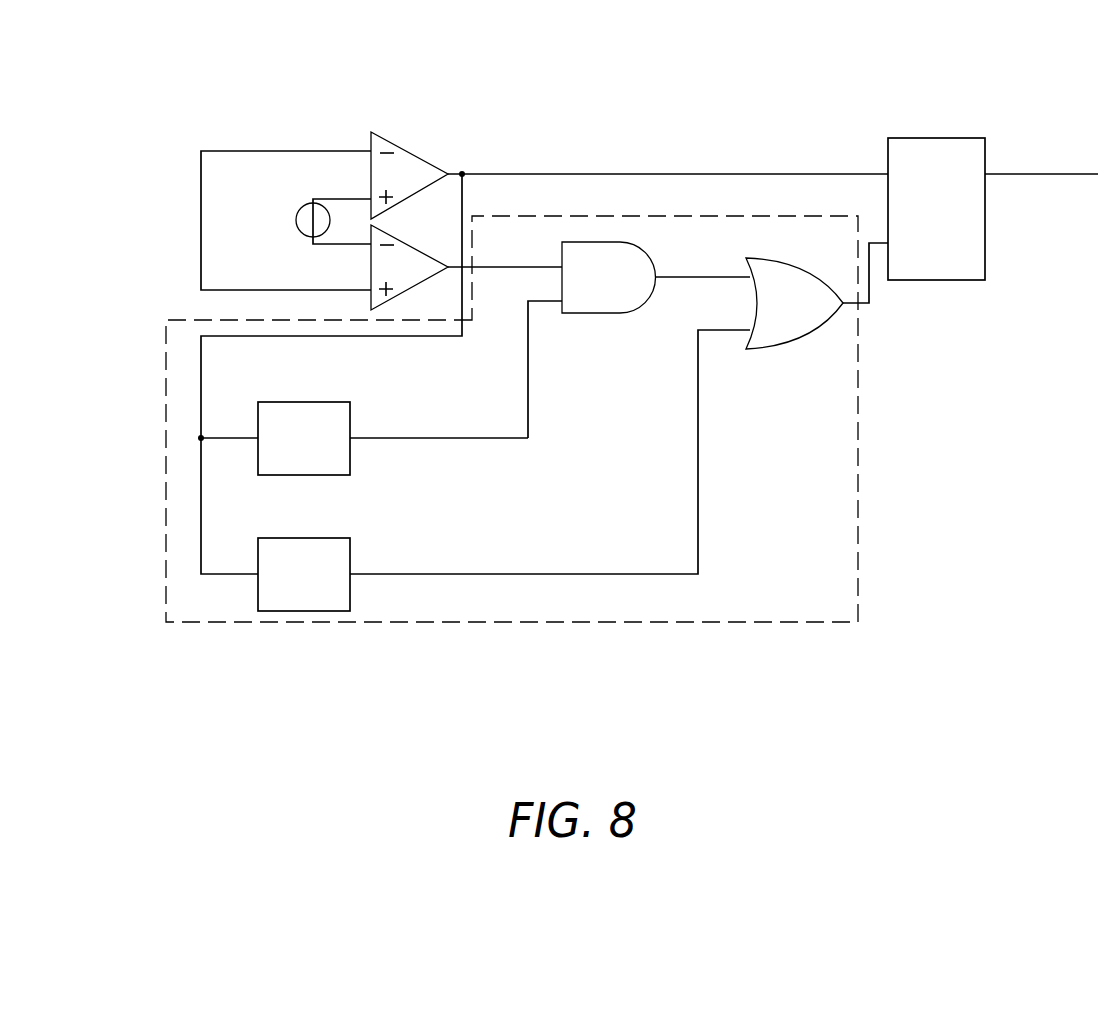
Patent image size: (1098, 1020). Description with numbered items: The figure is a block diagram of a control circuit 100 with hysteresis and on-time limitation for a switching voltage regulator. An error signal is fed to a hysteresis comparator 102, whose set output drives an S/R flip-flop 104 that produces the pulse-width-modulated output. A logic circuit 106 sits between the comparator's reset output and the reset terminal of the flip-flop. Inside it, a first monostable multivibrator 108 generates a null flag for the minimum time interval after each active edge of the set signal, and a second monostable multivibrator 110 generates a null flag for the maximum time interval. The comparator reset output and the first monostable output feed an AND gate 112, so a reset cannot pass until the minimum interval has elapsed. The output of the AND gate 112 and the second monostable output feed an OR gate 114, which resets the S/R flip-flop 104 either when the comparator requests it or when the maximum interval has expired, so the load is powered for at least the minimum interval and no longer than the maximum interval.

The control circuit 100 is at (528, 78).
The hysteresis comparator 102 is at (315, 128).
The S/R flip-flop 104 is at (950, 260).
The logic circuit 106 is at (858, 420).
The first monostable multivibrator 108 is at (335, 462).
The second monostable multivibrator 110 is at (312, 603).
The AND gate 112 is at (585, 300).
The OR gate 114 is at (773, 317).